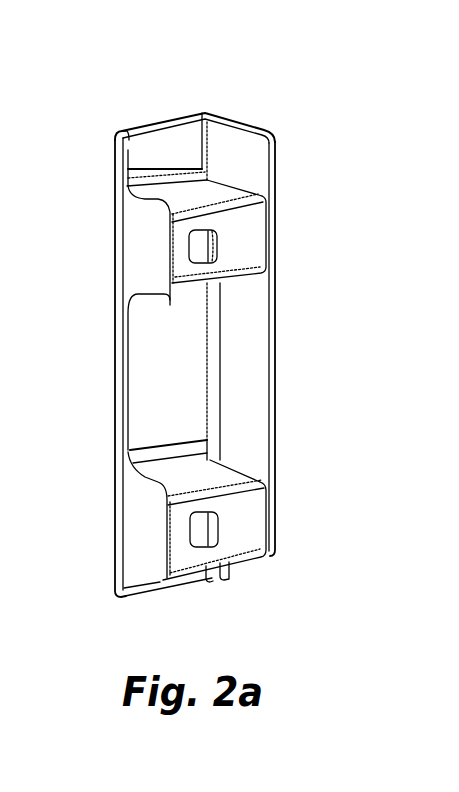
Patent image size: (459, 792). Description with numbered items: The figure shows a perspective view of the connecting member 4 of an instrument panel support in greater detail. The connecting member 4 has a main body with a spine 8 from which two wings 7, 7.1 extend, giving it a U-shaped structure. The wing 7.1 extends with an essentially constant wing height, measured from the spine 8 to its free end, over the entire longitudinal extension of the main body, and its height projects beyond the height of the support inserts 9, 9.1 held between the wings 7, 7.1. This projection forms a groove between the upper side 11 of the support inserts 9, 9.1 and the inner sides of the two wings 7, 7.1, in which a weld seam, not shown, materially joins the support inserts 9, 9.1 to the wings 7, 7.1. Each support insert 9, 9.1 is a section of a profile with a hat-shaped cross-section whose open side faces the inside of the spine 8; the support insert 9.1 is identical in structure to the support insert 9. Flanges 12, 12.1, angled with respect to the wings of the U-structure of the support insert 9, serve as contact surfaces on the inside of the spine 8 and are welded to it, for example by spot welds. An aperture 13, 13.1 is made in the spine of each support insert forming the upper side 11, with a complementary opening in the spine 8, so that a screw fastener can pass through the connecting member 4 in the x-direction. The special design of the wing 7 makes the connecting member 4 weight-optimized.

The connecting member 4 is at (247, 112).
The wing 7 is at (124, 309).
The wing 7.1 is at (274, 364).
The spine 8 is at (182, 375).
The support insert 9 is at (193, 192).
The support insert 9.1 is at (215, 481).
The upper side 11 is at (255, 231).
The flange 12 is at (156, 172).
The flange 12.1 is at (210, 290).
The aperture 13 is at (214, 234).
The aperture 13.1 is at (216, 533).